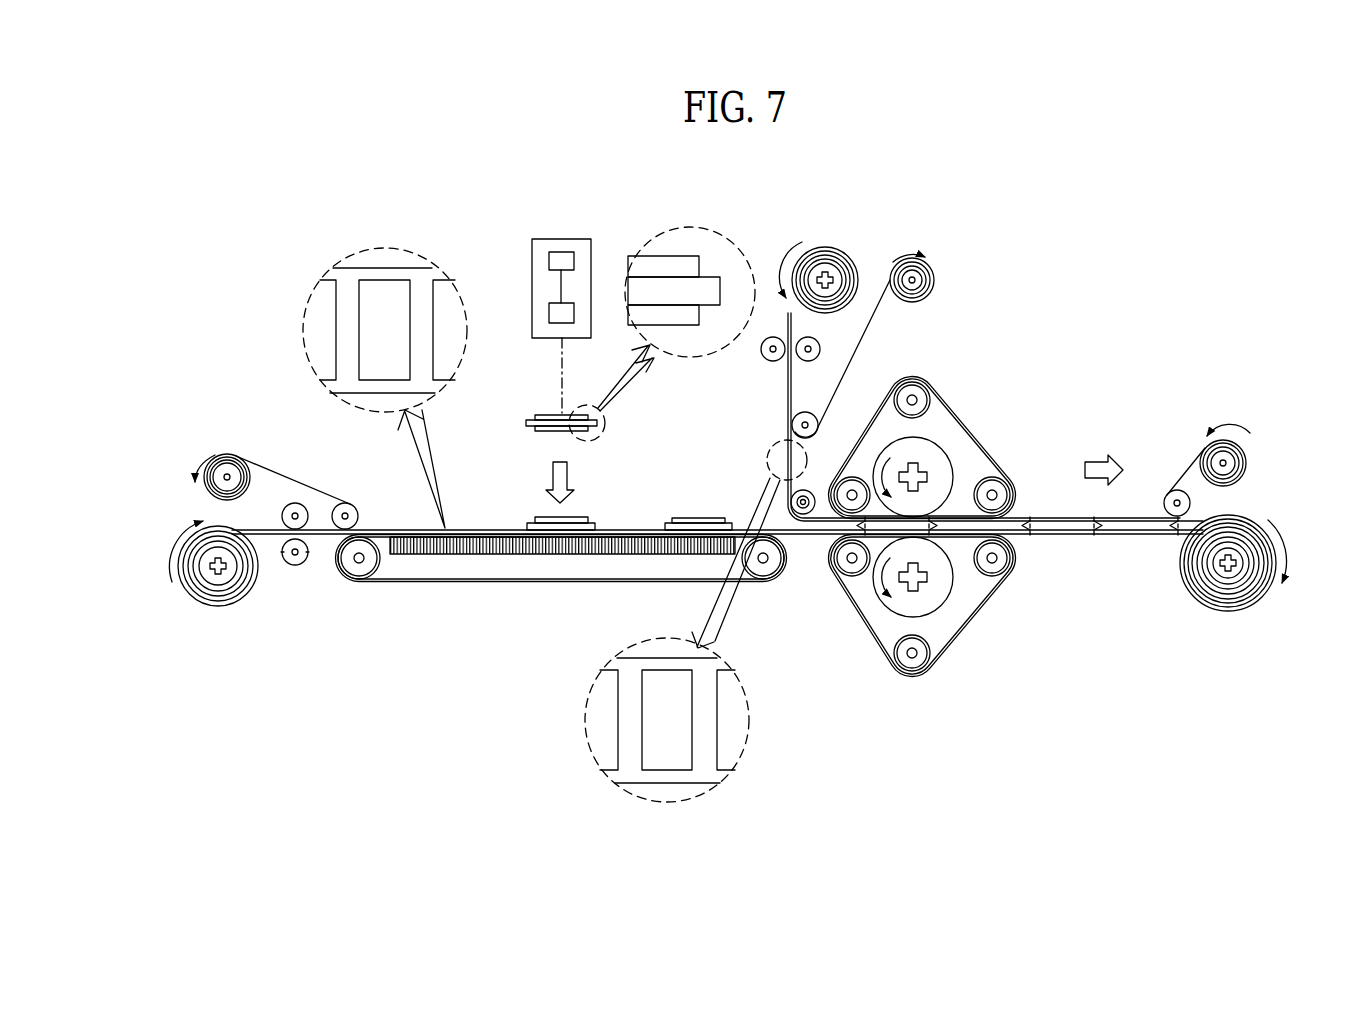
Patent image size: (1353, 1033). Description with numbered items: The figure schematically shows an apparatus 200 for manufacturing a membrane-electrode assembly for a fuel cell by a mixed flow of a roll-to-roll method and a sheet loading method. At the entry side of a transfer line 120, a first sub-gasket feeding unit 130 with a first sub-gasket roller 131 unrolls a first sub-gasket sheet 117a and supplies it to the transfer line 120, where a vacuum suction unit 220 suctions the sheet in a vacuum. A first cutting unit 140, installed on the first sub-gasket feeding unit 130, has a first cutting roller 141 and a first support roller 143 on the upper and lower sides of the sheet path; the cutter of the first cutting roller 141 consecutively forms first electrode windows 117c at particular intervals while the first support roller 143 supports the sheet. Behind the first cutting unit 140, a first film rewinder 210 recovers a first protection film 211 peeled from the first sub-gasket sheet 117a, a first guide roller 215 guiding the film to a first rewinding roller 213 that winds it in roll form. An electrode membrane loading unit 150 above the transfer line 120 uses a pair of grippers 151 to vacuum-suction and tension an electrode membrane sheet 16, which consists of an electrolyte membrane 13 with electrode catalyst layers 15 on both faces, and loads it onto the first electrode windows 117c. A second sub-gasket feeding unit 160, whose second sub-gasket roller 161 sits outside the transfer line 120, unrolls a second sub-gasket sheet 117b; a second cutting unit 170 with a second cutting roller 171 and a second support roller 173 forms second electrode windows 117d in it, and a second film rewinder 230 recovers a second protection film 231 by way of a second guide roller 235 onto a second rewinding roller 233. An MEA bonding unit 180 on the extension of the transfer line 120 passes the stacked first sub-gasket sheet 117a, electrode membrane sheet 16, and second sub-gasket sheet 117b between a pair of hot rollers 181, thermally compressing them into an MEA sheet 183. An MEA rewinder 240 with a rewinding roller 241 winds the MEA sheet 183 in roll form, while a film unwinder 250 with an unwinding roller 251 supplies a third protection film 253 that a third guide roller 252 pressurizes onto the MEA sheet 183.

The apparatus for manufacturing a membrane-electrode assembly 200 is at (633, 167).
The first sub-gasket sheet 117a is at (717, 426).
The second sub-gasket sheet 117b is at (857, 496).
The first electrode window 117c is at (372, 314).
The second electrode window 117d is at (665, 720).
The electrode membrane loading unit 150 is at (532, 305).
The gripper 151 is at (561, 252).
The electrode catalyst layer 15 is at (662, 311).
The electrolyte membrane 13 is at (708, 282).
The electrode membrane sheet 16 is at (522, 421).
The second sub-gasket feeding unit 160 is at (836, 248).
The second sub-gasket roller 161 is at (826, 268).
The second film rewinder 230 is at (959, 257).
The second rewinding roller 233 is at (914, 282).
The second protection film 231 is at (866, 336).
The second cutting unit 170 is at (792, 386).
The second cutting roller 171 is at (772, 362).
The second support roller 173 is at (812, 352).
The second guide roller 235 is at (767, 451).
The MEA bonding unit 180 is at (935, 532).
The hot roller 181 is at (925, 452).
The first film rewinder 210 is at (218, 470).
The first protection film 211 is at (285, 475).
The first rewinding roller 213 is at (233, 486).
The first guide roller 215 is at (343, 524).
The first cutting unit 140 is at (301, 561).
The first cutting roller 141 is at (303, 563).
The first support roller 143 is at (303, 504).
The first sub-gasket feeding unit 130 is at (214, 601).
The first sub-gasket roller 131 is at (214, 572).
The transfer line 120 is at (561, 535).
The vacuum suction unit 220 is at (458, 556).
The film unwinder 250 is at (1255, 426).
The unwinding roller 251 is at (1228, 462).
The third guide roller 252 is at (1170, 503).
The third protection film 253 is at (1183, 478).
The MEA rewinder 240 is at (1208, 598).
The rewinding roller 241 is at (1238, 572).
The MEA sheet 183 is at (1187, 587).